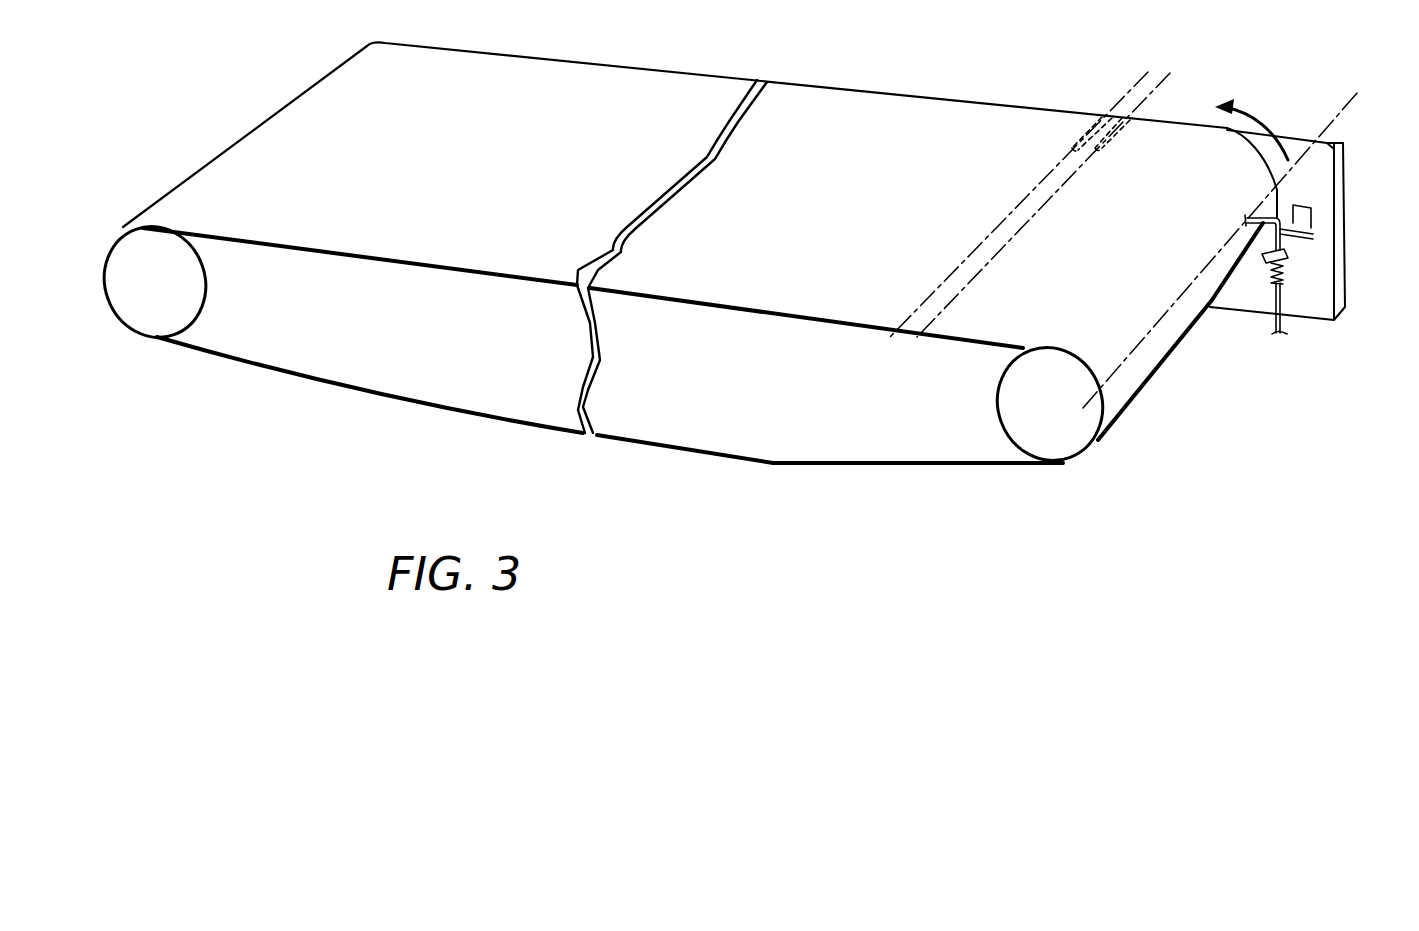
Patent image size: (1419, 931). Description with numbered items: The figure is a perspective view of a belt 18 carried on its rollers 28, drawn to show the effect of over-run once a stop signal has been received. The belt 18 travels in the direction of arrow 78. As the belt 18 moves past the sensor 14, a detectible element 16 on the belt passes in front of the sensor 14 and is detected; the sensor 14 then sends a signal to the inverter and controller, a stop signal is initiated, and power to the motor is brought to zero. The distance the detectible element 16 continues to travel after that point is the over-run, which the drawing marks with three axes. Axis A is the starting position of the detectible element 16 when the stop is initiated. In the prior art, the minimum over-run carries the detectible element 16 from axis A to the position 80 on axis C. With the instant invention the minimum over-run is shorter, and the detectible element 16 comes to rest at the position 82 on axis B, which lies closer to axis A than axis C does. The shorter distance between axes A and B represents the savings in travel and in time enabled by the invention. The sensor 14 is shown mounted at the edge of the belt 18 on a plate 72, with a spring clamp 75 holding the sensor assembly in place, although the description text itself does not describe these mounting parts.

The sensor 14 is at (1285, 205).
The detectible element 16 is at (1258, 205).
The belt 18 is at (900, 123).
The rollers 28 is at (158, 303).
The mounting plate 72 is at (1313, 240).
The spring clamp 75 is at (1268, 282).
The arrow 78 is at (1268, 117).
The position 80 is at (1070, 150).
The position 82 is at (1113, 140).
The axis A is at (1226, 235).
The axis B is at (1052, 193).
The axis C is at (1026, 190).